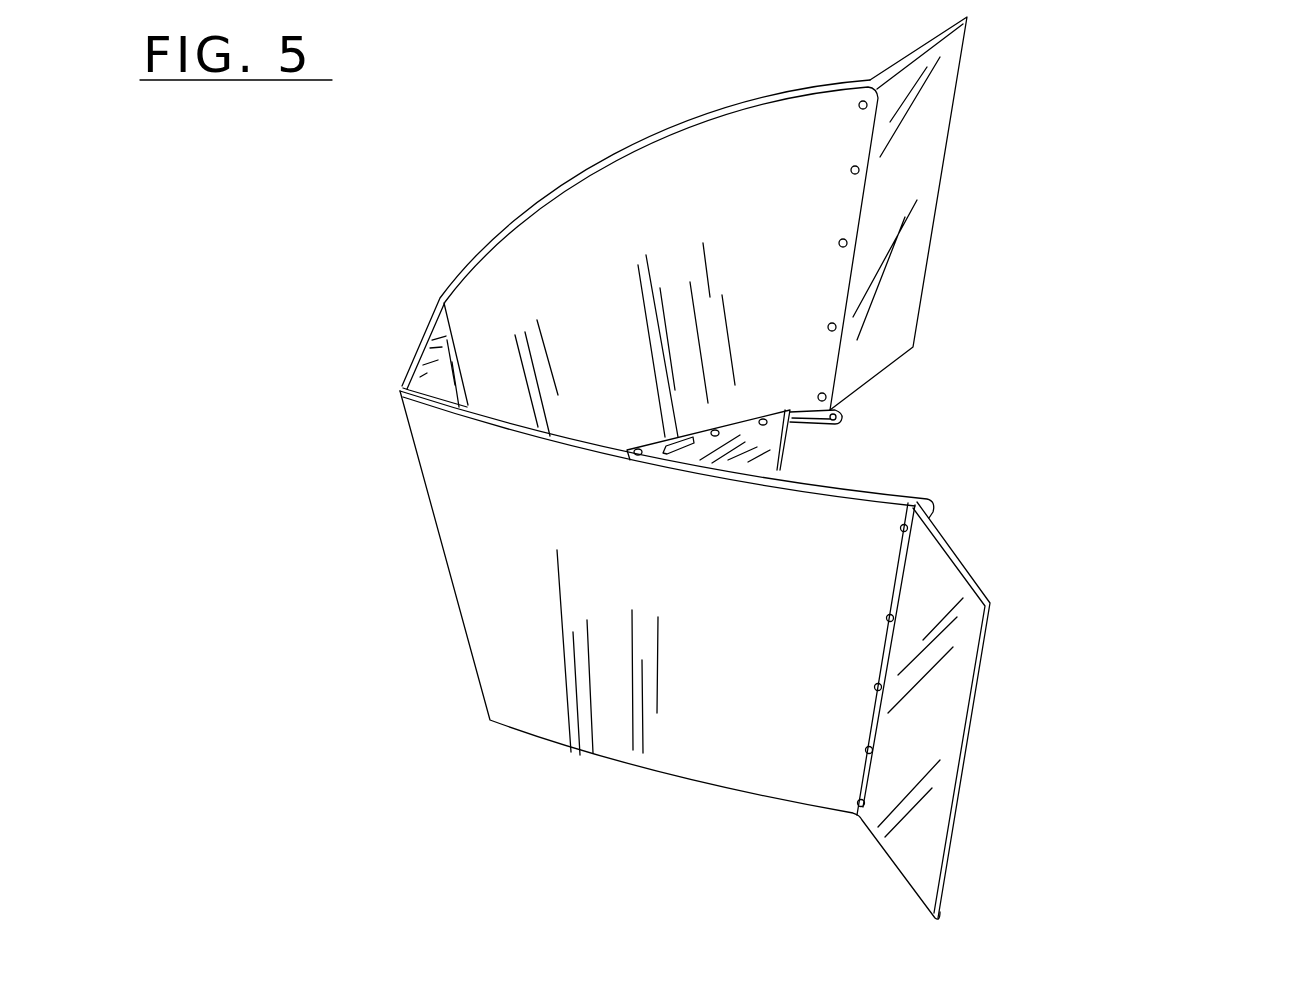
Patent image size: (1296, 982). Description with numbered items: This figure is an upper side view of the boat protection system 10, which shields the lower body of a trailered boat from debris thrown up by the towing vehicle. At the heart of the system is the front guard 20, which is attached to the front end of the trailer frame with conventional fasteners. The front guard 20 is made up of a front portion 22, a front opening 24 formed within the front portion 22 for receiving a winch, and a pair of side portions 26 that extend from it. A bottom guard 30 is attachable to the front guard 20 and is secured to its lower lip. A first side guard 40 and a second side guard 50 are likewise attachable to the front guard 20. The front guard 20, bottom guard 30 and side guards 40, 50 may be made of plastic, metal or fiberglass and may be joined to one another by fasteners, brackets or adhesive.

The boat protection system 10 is at (1168, 186).
The front guard 20 is at (545, 167).
The front portion 22 is at (420, 378).
The front opening 24 is at (433, 310).
The side portions 26 is at (687, 150).
The bottom guard 30 is at (780, 438).
The first side guard 40 is at (940, 187).
The second side guard 50 is at (948, 712).